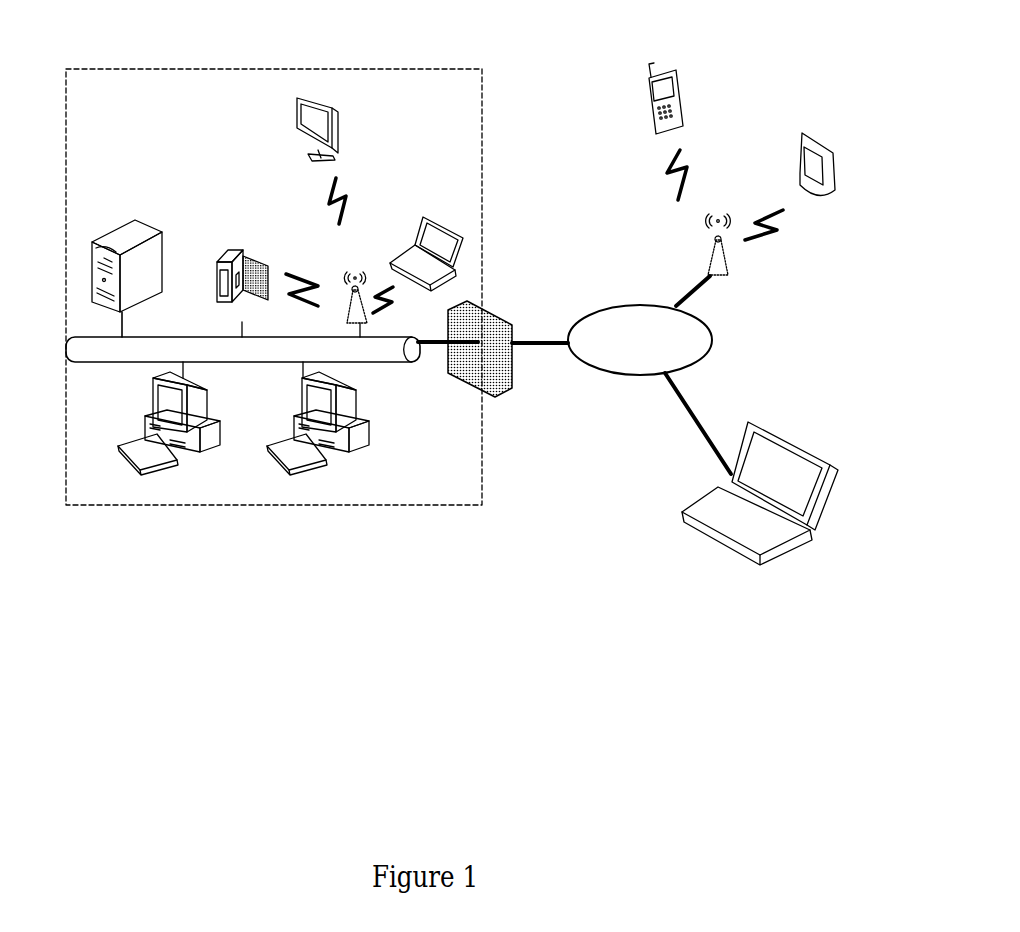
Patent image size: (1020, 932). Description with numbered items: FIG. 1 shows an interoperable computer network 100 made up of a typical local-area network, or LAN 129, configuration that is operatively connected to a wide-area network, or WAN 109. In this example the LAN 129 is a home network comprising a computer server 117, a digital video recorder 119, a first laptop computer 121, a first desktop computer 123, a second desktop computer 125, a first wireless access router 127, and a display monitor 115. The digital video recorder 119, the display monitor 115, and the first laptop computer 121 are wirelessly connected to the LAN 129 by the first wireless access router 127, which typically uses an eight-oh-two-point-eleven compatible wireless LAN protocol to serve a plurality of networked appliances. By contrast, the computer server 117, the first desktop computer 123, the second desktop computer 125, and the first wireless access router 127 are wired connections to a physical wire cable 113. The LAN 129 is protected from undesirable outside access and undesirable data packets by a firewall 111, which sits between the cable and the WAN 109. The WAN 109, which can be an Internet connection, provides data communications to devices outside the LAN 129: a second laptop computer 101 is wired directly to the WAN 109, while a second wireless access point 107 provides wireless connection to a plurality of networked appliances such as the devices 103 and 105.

The interoperable computer network 100 is at (427, 763).
The second laptop computer 101 is at (760, 493).
The networked appliance 103 is at (668, 72).
The networked appliance 105 is at (820, 140).
The second wireless access point 107 is at (725, 268).
The wide-area network (WAN) 109 is at (640, 340).
The firewall 111 is at (498, 392).
The physical wire cable 113 is at (243, 349).
The display monitor 115 is at (318, 128).
The computer server 117 is at (132, 232).
The digital video recorder 119 is at (250, 255).
The first laptop computer 121 is at (443, 232).
The first desktop computer 123 is at (202, 440).
The second desktop computer 125 is at (355, 440).
The first wireless access router 127 is at (357, 315).
The local-area network (LAN) 129 is at (348, 69).